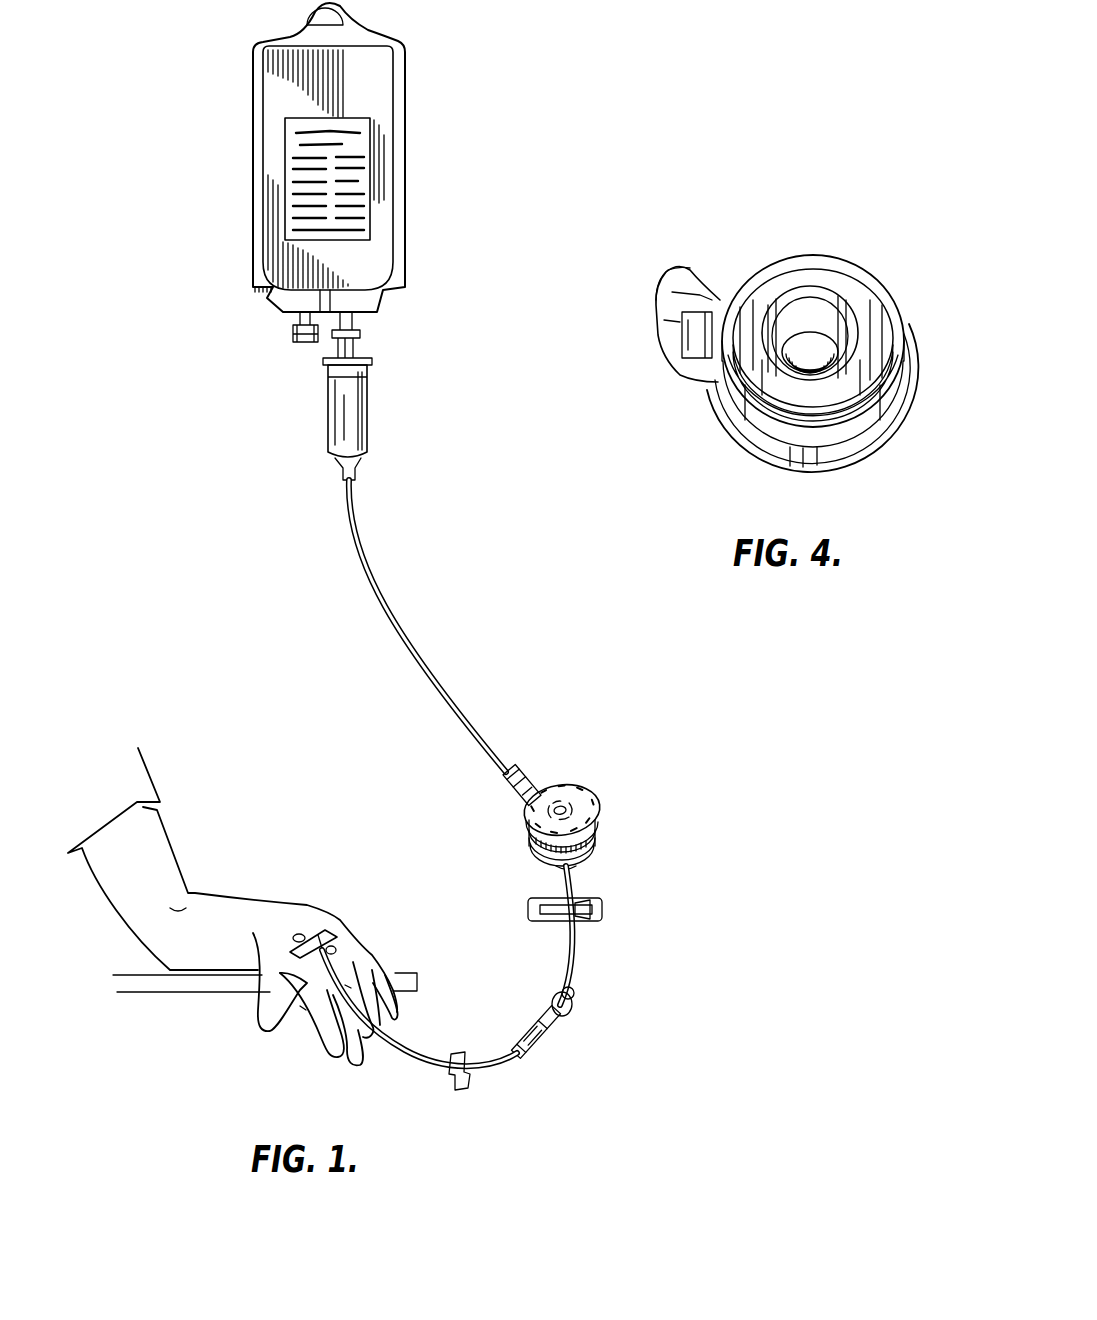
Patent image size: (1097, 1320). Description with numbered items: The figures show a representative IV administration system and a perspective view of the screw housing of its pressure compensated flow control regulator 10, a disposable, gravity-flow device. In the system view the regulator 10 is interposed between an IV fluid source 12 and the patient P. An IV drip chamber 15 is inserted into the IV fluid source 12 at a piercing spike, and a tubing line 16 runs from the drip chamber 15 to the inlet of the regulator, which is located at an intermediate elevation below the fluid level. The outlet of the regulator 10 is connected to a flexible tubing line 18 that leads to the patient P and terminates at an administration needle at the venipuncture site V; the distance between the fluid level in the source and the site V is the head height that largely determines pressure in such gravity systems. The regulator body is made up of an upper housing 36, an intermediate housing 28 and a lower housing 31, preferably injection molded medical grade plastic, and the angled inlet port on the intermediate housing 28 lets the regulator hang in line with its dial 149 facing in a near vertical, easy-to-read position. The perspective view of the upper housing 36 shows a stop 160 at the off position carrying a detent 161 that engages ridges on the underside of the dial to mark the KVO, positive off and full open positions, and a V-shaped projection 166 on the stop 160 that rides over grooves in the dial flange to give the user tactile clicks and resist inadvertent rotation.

In FIG. 1, the IV fluid source 12 is at (392, 142).
In FIG. 1, the IV drip chamber 15 is at (363, 400).
In FIG. 1, the tubing line 16 is at (412, 630).
In FIG. 1, the flow control regulator 10 is at (582, 818).
In FIG. 1, the dial 149 is at (583, 790).
In FIG. 1, the intermediate housing 28 is at (520, 833).
In FIG. 1, the lower housing 31 is at (573, 868).
In FIG. 1, the flexible tubing line 18 is at (577, 977).
In FIG. 1, the patient P is at (170, 850).
In FIG. 1, the venipuncture site V is at (327, 920).
In FIG. 4, the upper housing 36 is at (875, 455).
In FIG. 4, the stop 160 is at (690, 275).
In FIG. 4, the detent 161 is at (675, 350).
In FIG. 4, the V-shaped projection 166 is at (652, 295).